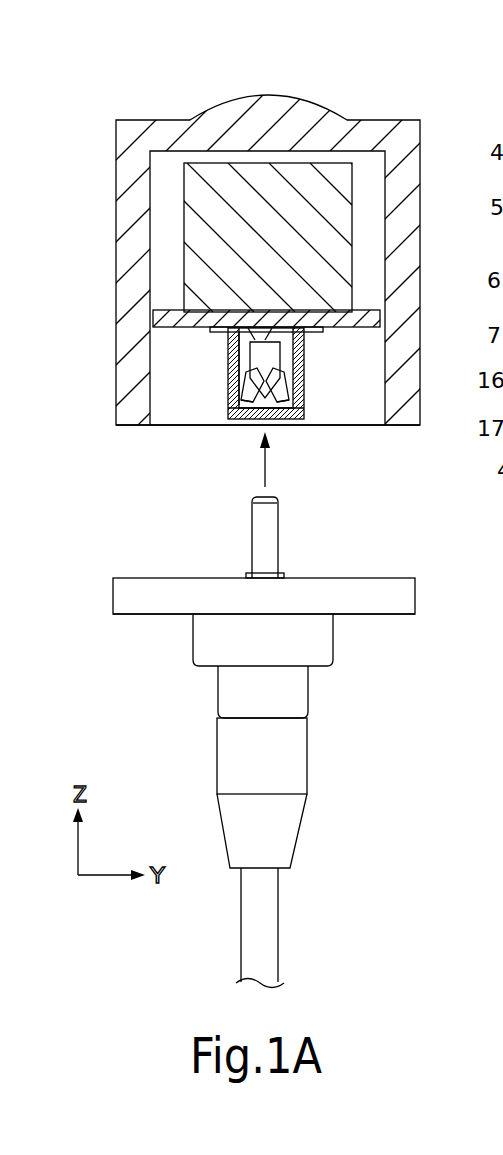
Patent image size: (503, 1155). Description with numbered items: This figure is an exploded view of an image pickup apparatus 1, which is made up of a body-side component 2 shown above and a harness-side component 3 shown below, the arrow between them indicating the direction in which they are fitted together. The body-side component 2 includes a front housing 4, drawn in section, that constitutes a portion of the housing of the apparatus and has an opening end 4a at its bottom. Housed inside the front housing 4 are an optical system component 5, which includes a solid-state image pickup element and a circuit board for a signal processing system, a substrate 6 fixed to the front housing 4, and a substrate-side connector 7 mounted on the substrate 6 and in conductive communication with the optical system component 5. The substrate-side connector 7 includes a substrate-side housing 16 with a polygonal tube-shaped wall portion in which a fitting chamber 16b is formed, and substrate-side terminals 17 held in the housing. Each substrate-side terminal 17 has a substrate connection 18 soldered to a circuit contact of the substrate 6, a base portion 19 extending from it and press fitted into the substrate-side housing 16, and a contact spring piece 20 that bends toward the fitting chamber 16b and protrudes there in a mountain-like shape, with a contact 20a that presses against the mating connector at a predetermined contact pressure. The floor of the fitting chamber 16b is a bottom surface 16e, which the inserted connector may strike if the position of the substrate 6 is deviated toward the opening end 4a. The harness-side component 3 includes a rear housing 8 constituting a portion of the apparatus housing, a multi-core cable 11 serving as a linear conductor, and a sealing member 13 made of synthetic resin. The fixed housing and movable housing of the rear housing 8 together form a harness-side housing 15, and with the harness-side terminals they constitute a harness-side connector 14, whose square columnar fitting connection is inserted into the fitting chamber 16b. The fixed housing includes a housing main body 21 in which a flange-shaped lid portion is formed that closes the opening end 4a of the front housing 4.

The image pickup apparatus 1 is at (276, 78).
The body-side component 2 is at (148, 118).
The harness-side component 3 is at (113, 593).
The front housing 4 is at (117, 153).
The opening end 4a is at (133, 425).
The optical system component 5 is at (183, 217).
The substrate 6 is at (165, 311).
The substrate-side connector 7 is at (228, 347).
The rear housing 8 is at (218, 692).
The multi-core cable 11 is at (278, 928).
The sealing member 13 is at (299, 830).
The harness-side connector 14 is at (252, 532).
The harness-side housing 15 is at (416, 598).
The substrate-side housing 16 is at (228, 380).
The fitting chamber 16b is at (270, 357).
The bottom surface 16e is at (228, 367).
The substrate-side terminals 17 is at (228, 397).
The substrate connection 18 is at (312, 310).
The base portion 19 is at (293, 337).
The contact spring piece 20 is at (278, 388).
The contact 20a is at (268, 388).
The housing main body 21 is at (388, 615).